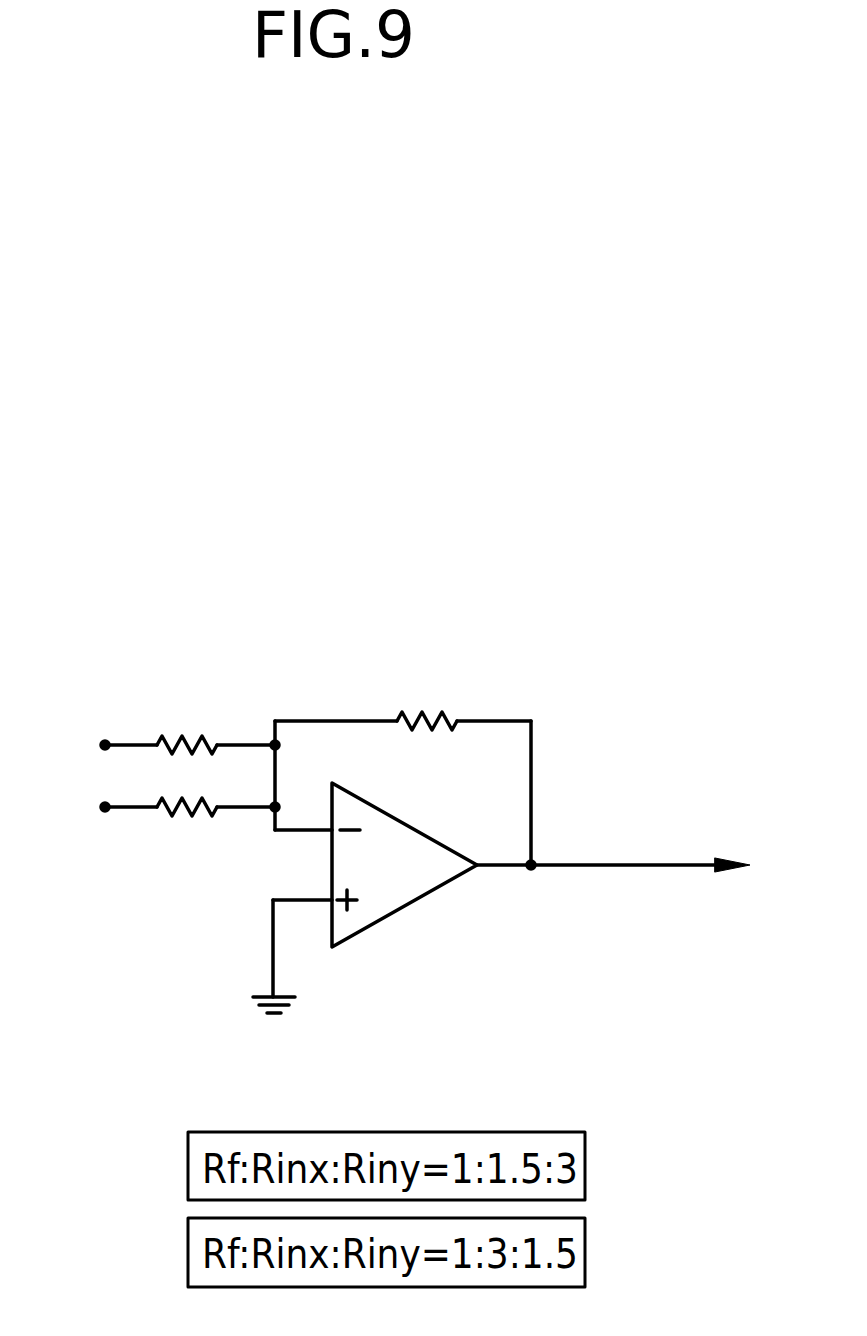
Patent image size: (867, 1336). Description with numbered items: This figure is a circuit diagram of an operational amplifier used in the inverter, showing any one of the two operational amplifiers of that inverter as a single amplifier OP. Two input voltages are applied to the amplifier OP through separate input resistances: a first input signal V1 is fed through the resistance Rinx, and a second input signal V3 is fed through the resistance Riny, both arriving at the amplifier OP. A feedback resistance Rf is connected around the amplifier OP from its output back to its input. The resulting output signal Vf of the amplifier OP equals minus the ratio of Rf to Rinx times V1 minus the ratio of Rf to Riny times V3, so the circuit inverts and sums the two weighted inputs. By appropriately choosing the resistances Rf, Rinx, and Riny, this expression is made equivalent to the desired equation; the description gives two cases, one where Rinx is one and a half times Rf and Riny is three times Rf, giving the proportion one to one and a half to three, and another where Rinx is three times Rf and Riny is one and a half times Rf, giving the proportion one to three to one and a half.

The input signal V1 is at (99, 745).
The input signal V3 is at (99, 809).
The resistance Rinx is at (213, 721).
The resistance Riny is at (213, 832).
The resistance Rf is at (403, 765).
The amplifier OP is at (403, 907).
The output signal Vf is at (639, 866).